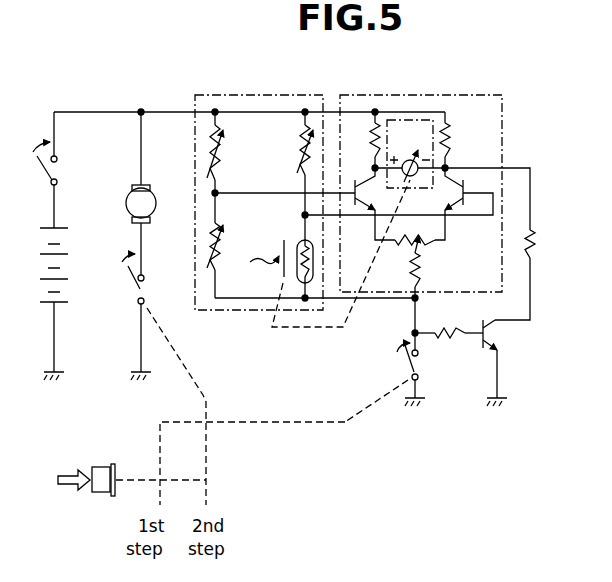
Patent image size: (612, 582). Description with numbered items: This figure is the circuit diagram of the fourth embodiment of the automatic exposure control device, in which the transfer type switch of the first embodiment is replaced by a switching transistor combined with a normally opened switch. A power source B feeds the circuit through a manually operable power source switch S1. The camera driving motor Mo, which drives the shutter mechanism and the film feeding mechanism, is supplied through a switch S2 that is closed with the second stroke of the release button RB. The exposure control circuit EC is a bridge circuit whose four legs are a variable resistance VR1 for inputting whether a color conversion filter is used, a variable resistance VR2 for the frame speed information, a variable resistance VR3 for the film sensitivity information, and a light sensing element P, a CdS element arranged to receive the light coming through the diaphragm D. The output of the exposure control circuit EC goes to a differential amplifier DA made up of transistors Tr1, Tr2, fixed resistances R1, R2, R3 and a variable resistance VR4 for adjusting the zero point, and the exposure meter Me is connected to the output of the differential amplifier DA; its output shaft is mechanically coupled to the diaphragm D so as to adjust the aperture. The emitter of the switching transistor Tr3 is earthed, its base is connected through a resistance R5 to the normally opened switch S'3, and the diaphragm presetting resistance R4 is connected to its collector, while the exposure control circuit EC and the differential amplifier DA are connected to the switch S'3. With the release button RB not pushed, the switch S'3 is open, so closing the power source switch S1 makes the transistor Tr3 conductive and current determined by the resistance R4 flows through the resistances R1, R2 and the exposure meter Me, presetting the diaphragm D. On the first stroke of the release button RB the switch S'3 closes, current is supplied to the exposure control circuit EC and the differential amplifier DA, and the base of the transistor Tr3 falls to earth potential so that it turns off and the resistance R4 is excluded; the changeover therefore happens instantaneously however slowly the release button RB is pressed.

The power source switch S1 is at (40, 172).
The power source B is at (42, 262).
The camera driving motor Mo is at (126, 196).
The motor control switch S2 is at (132, 285).
The exposure control circuit EC is at (240, 96).
The variable resistance VR1 is at (224, 150).
The variable resistance VR2 is at (206, 250).
The variable resistance VR3 is at (300, 160).
The diaphragm D is at (280, 243).
The light sensing element P is at (300, 245).
The differential amplifier DA is at (393, 96).
The resistance R1 is at (370, 132).
The resistance R2 is at (450, 140).
The exposure meter Me is at (410, 154).
The transistor Tr1 is at (367, 200).
The transistor Tr2 is at (453, 200).
The variable resistance VR4 is at (425, 246).
The resistance R3 is at (411, 268).
The diaphragm presetting resistance R4 is at (534, 246).
The resistance R5 is at (447, 330).
The switching transistor Tr3 is at (500, 338).
The normally opened switch S'3 is at (402, 377).
The release button RB is at (96, 474).